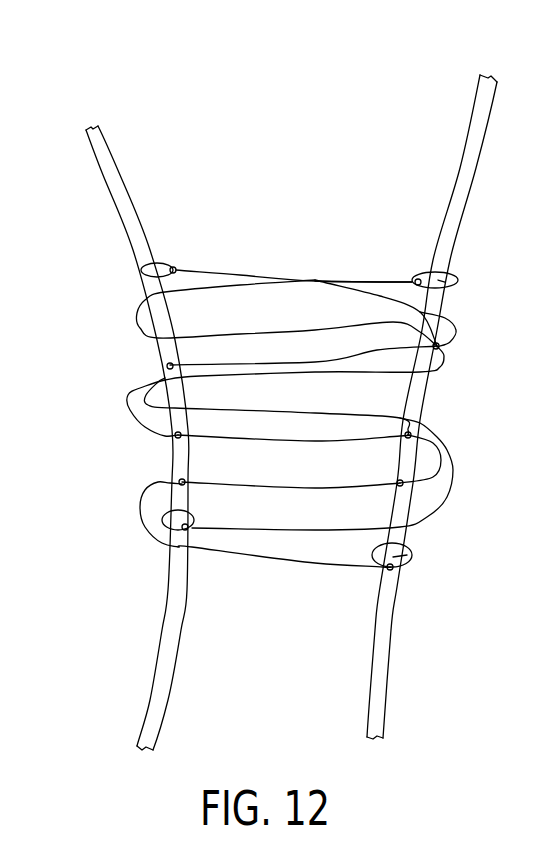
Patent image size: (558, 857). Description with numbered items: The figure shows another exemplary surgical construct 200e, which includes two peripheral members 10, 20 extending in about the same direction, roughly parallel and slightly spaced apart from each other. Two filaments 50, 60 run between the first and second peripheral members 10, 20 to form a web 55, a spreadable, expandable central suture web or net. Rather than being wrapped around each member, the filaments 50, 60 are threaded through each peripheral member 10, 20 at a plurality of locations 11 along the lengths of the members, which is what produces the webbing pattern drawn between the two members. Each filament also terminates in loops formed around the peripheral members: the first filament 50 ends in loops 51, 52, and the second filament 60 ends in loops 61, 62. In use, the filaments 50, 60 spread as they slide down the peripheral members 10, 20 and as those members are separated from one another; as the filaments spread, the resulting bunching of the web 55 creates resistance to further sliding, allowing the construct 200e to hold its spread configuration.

The surgical construct 200e is at (100, 88).
The first peripheral member 10 is at (112, 174).
The second peripheral member 20 is at (460, 168).
The filament 50 is at (200, 270).
The filament 60 is at (387, 277).
The loop 62 is at (467, 280).
The loop 52 is at (140, 266).
The web 55 is at (282, 568).
The locations 11 is at (170, 366).
The loop 51 is at (162, 530).
The loop 61 is at (412, 555).